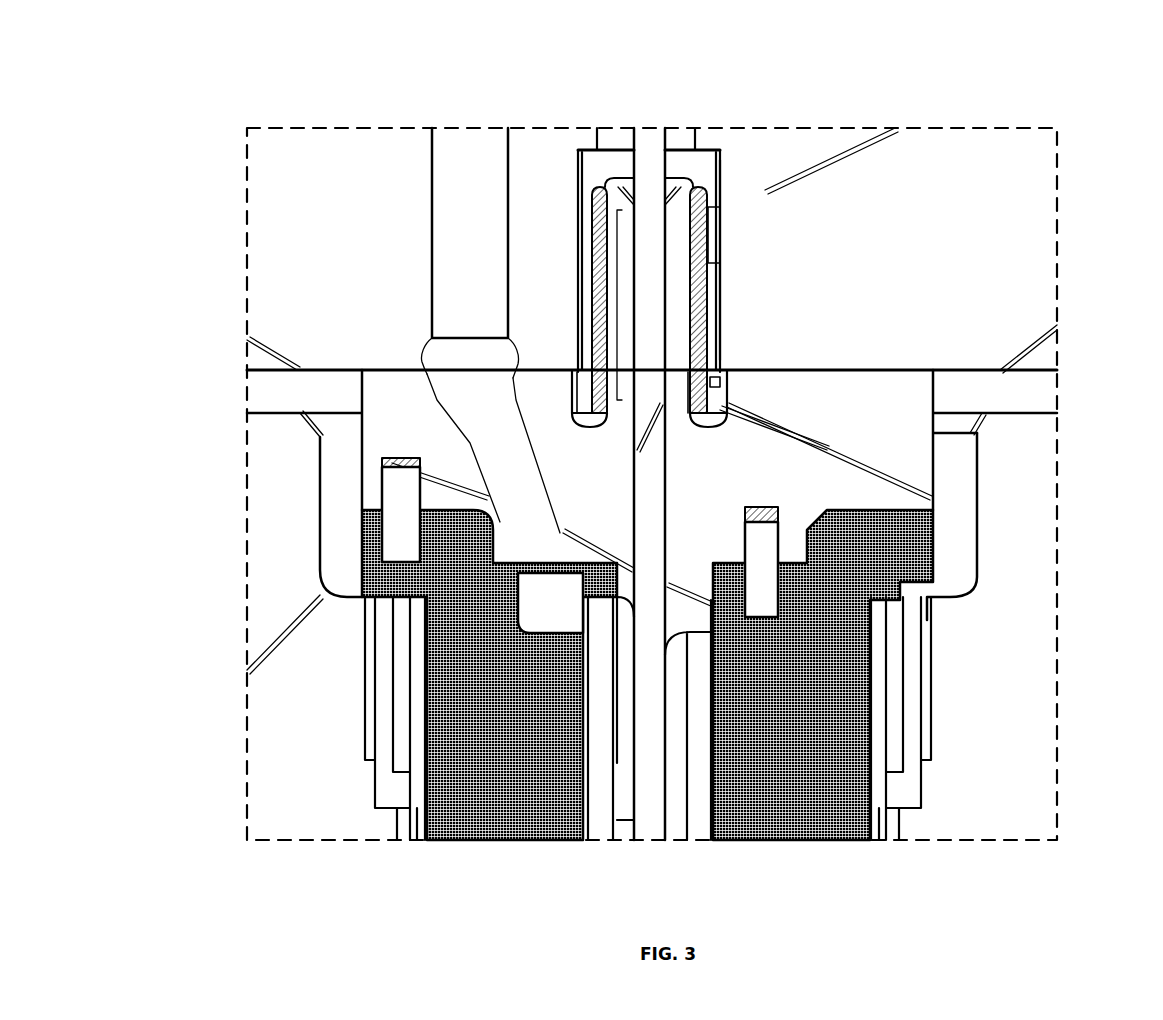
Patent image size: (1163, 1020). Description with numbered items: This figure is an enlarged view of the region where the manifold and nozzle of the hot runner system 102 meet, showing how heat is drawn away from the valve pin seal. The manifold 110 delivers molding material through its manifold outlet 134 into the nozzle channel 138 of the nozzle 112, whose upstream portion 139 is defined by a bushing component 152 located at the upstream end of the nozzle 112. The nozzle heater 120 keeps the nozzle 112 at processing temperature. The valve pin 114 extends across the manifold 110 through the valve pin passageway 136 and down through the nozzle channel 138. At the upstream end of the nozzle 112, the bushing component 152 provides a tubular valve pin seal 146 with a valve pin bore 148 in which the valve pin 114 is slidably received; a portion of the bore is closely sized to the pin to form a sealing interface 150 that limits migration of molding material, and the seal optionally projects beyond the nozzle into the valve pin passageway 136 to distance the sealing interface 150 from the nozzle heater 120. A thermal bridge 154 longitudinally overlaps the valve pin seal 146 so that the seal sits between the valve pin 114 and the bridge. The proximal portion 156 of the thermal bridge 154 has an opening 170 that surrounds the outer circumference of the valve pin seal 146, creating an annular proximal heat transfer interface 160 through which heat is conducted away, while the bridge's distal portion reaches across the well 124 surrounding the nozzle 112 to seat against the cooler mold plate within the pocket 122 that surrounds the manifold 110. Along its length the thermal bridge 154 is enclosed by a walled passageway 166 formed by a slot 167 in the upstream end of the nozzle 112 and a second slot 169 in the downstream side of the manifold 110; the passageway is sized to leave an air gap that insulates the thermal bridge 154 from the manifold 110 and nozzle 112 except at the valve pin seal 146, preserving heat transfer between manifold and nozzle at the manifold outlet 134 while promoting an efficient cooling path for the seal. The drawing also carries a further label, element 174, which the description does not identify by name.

The hot runner system 102 is at (1030, 106).
The manifold 110 is at (1017, 242).
The nozzle 112 is at (885, 562).
The valve pin 114 is at (648, 140).
The nozzle heater 120 is at (877, 830).
The pocket 122 is at (262, 413).
The well 124 is at (403, 825).
The manifold outlet 134 is at (460, 238).
The valve pin passageway 136 is at (600, 132).
The nozzle channel 138 is at (598, 800).
The upstream portion of nozzle channel 139 is at (490, 460).
The valve pin seal 146 is at (675, 350).
The valve pin bore 148 is at (660, 315).
The sealing interface 150 is at (600, 282).
The bushing component 152 is at (885, 443).
The thermal bridge 154 is at (591, 326).
The proximal portion 156 is at (590, 418).
The proximal heat transfer interface 160 is at (700, 263).
The walled passageway 166 is at (733, 177).
The slot 167 is at (712, 378).
The second slot 169 is at (700, 243).
The opening 170 is at (683, 368).
The cap 174 is at (693, 190).